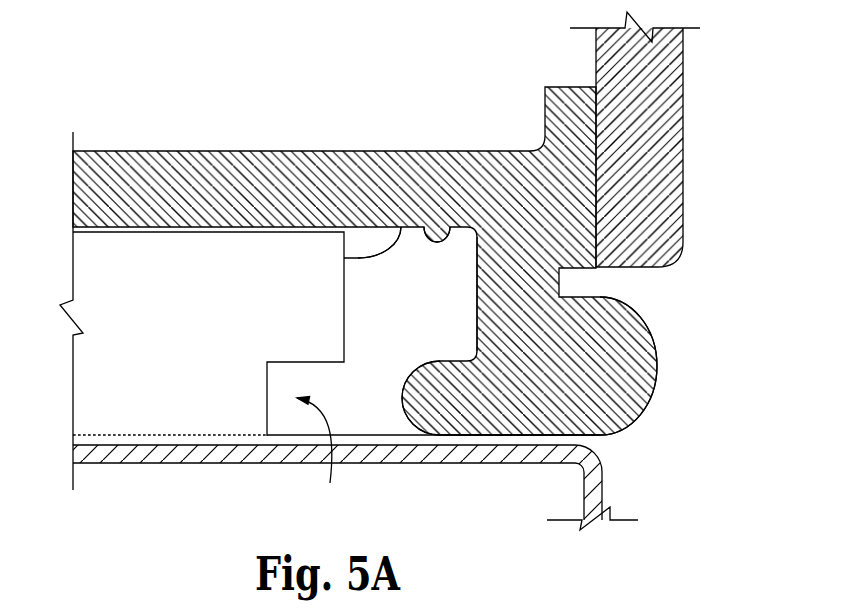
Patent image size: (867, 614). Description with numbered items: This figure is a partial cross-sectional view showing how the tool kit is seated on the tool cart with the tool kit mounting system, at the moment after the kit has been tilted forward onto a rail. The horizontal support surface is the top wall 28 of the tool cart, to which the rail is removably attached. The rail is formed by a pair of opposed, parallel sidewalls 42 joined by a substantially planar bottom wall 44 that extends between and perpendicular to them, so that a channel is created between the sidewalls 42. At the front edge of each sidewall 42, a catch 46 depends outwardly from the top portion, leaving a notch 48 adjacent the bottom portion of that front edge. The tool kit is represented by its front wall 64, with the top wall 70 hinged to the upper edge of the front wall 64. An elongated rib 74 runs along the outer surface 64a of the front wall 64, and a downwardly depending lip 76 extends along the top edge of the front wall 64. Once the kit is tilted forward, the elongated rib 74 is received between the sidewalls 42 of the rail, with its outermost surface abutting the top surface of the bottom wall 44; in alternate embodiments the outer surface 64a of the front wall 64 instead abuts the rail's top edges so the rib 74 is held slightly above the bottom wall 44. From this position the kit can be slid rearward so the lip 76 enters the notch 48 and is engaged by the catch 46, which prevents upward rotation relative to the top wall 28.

The front wall 64 is at (193, 151).
The top wall 70 is at (683, 100).
The top wall 28 is at (138, 463).
The sidewall 42 is at (165, 332).
The bottom wall 44 is at (185, 428).
The elongated rib 74 is at (412, 327).
The catch 46 is at (402, 227).
The outer surface 64a is at (457, 227).
The lip 76 is at (400, 398).
The notch 48 is at (319, 456).